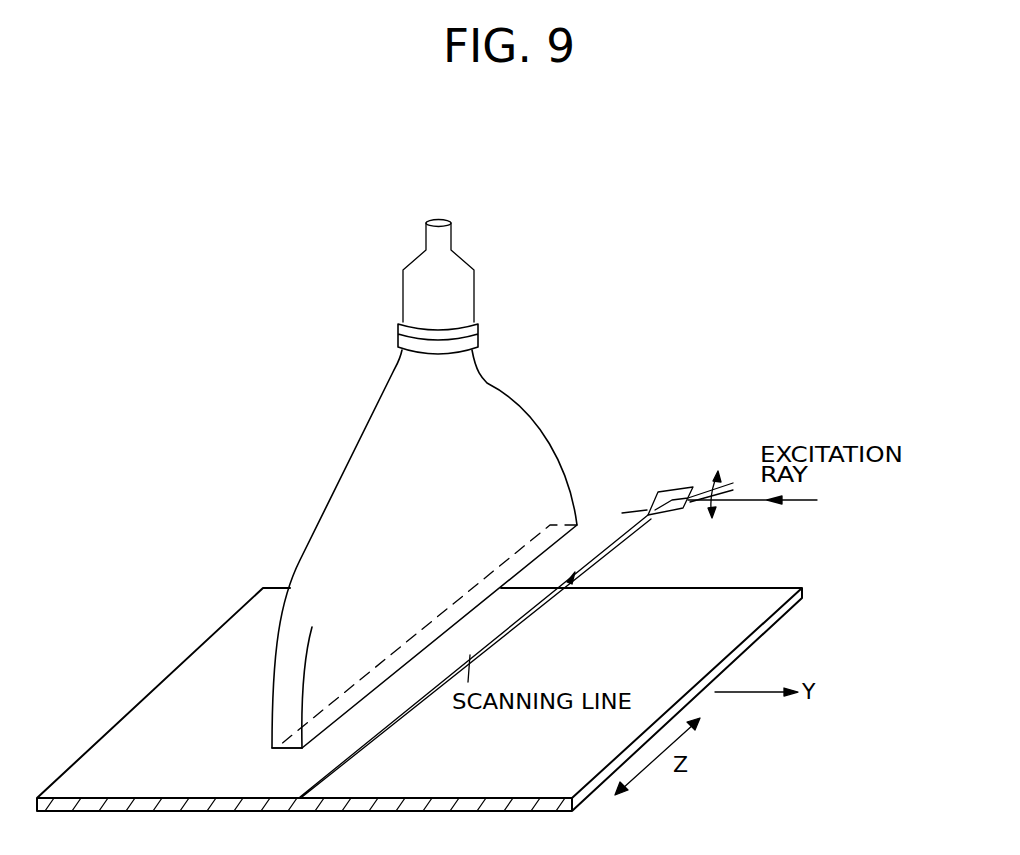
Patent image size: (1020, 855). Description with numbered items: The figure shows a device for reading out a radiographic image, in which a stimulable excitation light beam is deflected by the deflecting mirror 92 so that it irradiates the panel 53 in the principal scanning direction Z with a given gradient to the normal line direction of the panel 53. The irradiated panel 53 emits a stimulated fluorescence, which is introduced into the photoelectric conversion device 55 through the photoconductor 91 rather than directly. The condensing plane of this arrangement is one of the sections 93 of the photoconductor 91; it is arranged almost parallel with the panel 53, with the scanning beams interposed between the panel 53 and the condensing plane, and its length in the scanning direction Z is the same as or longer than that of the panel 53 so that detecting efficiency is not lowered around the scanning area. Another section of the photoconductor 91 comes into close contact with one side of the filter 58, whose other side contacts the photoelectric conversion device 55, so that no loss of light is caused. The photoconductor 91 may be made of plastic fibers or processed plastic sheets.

The panel 53 is at (752, 598).
The photoelectric conversion device 55 is at (465, 298).
The filter 58 is at (477, 333).
The photoconductor 91 is at (515, 425).
The deflecting mirror 92 is at (657, 493).
The section of the photoconductor 93 is at (283, 748).